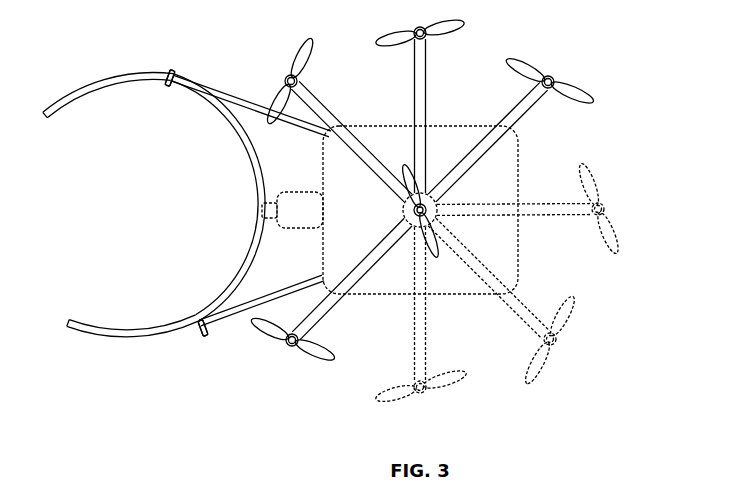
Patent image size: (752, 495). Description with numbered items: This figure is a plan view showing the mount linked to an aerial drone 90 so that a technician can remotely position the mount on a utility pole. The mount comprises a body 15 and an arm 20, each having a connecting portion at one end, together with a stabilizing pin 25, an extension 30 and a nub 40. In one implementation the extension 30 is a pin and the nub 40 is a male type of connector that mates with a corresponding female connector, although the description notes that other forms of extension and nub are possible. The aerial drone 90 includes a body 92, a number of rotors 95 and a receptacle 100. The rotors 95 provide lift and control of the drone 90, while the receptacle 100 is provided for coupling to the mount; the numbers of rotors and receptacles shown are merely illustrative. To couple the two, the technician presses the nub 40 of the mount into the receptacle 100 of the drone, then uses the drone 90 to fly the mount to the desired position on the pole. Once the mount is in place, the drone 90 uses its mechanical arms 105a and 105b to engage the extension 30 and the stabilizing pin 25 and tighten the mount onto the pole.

The body 15 is at (128, 340).
The arm 20 is at (95, 82).
The stabilizing pin 25 is at (192, 312).
The extension 30 is at (162, 91).
The nub 40 is at (263, 203).
The aerial drone 90 is at (475, 211).
The body 92 is at (518, 160).
The rotors 95 is at (587, 77).
The receptacle 100 is at (300, 213).
The mechanical arm 105a is at (200, 82).
The mechanical arm 105b is at (222, 330).